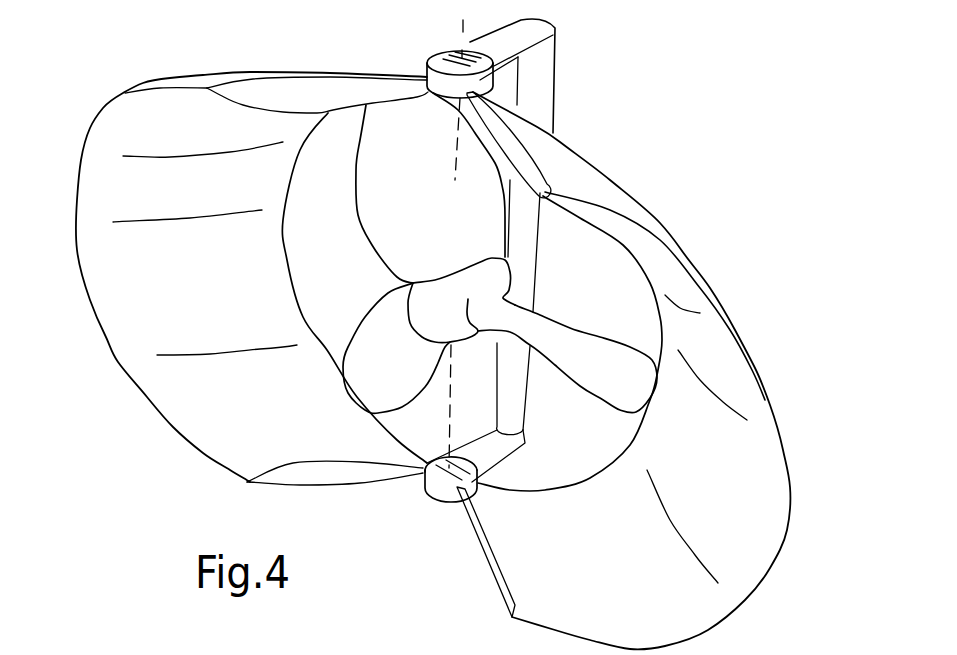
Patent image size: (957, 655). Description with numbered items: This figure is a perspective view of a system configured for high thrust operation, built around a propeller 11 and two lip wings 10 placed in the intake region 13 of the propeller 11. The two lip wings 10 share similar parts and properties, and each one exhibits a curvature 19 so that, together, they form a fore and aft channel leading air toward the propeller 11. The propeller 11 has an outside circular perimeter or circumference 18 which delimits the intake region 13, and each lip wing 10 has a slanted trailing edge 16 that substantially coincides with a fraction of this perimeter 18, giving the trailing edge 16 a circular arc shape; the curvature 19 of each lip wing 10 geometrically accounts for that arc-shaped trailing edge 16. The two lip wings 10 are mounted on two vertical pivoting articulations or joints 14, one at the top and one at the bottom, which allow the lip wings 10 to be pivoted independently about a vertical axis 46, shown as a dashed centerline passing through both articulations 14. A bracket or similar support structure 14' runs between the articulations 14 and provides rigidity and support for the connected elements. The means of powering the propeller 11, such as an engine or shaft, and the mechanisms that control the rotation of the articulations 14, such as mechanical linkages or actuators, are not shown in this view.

The lip wing 10 is at (222, 448).
The propeller 11 is at (363, 268).
The intake region 13 is at (210, 327).
The vertical pivoting articulation 14 is at (419, 283).
The bracket 14' is at (519, 250).
The slanted trailing edge 16 is at (317, 344).
The outside circular perimeter 18 is at (658, 320).
The curvature 19 is at (100, 237).
The vertical axis 46 is at (456, 147).